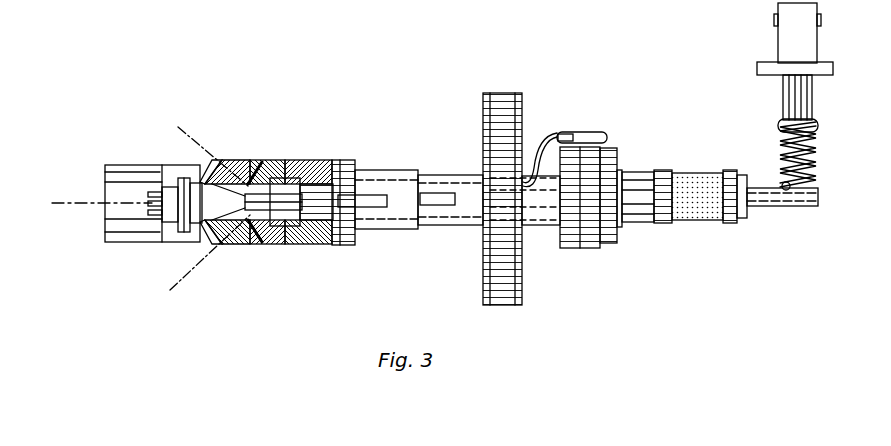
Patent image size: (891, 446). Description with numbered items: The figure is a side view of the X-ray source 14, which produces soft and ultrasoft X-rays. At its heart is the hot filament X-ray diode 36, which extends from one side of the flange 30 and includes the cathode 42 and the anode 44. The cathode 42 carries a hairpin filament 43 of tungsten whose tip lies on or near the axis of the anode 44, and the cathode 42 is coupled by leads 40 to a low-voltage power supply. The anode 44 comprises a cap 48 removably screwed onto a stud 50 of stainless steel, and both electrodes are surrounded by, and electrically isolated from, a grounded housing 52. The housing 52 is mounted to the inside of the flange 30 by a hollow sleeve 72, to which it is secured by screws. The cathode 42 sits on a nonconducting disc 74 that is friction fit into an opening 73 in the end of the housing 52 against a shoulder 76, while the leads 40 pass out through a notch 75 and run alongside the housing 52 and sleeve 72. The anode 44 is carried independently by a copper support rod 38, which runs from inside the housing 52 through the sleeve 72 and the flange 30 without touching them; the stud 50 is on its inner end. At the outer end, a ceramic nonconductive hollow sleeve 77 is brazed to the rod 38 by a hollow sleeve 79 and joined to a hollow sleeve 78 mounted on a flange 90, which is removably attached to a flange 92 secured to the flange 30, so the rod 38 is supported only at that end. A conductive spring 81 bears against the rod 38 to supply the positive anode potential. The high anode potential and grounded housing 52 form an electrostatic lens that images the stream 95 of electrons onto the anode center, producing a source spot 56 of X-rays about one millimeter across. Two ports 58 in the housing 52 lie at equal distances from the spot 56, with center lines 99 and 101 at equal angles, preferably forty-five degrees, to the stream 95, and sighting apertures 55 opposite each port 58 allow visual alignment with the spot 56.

The source 14 is at (578, 300).
The flange 30 is at (505, 95).
The hot filament X-ray diode 36 is at (295, 305).
The support rod 38 is at (400, 215).
The leads 40 is at (437, 193).
The cathode 42 is at (178, 182).
The hairpin filament 43 is at (206, 238).
The anode 44 is at (256, 172).
The cap 48 is at (276, 228).
The stud 50 is at (318, 193).
The grounded housing 52 is at (348, 246).
The sighting apertures 55 is at (297, 162).
The source spot 56 is at (262, 233).
The ports 58 is at (240, 170).
The hollow sleeve 72 is at (463, 175).
The opening 73 is at (118, 178).
The nonconducting disc 74 is at (150, 243).
The notch 75 is at (112, 232).
The shoulder 76 is at (174, 243).
The nonconductive hollow sleeve 77 is at (700, 175).
The hollow sleeve 78 is at (641, 172).
The hollow sleeve 79 is at (745, 222).
The conductive spring 81 is at (812, 162).
The flange 90 is at (604, 248).
The flange 92 is at (576, 250).
The stream of electrons 95 is at (212, 188).
The center line 99 is at (178, 128).
The center line 101 is at (170, 290).